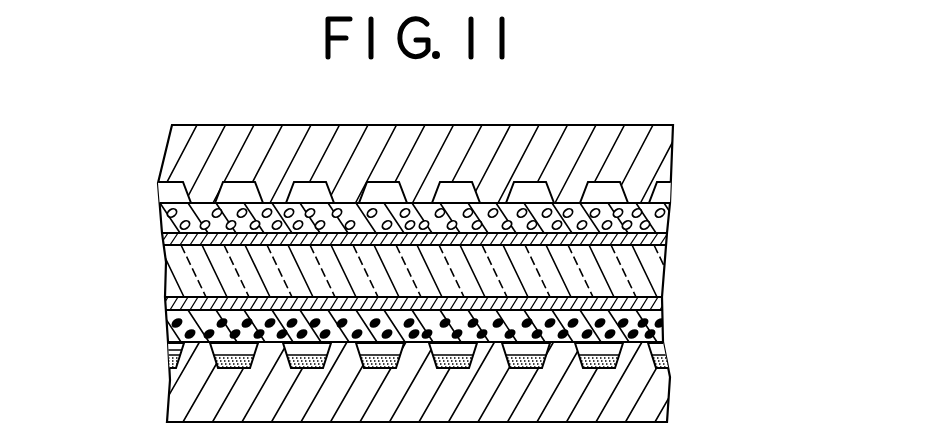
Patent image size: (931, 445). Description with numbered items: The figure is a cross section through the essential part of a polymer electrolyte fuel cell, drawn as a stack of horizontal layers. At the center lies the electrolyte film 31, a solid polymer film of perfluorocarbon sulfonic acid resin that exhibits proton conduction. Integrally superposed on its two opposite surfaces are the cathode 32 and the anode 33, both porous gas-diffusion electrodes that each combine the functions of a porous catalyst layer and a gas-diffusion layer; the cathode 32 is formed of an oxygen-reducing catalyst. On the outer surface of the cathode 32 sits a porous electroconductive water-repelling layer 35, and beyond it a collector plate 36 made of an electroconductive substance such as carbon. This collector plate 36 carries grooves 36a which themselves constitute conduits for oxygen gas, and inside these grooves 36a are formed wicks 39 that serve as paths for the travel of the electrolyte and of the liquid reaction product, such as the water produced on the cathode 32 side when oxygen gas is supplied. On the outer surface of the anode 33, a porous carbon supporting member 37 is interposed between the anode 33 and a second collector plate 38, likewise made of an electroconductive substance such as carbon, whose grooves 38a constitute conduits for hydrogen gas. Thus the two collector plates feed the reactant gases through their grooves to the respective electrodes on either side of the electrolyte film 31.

The electrolyte film 31 is at (664, 265).
The cathode 32 is at (662, 300).
The anode 33 is at (666, 235).
The porous electroconductive water-repelling layer 35 is at (664, 328).
The collector plate 36 is at (663, 394).
The grooves 36a is at (168, 350).
The porous carbon supporting member 37 is at (670, 216).
The collector plate 38 is at (662, 148).
The grooves 38a is at (606, 194).
The wicks 39 is at (168, 365).